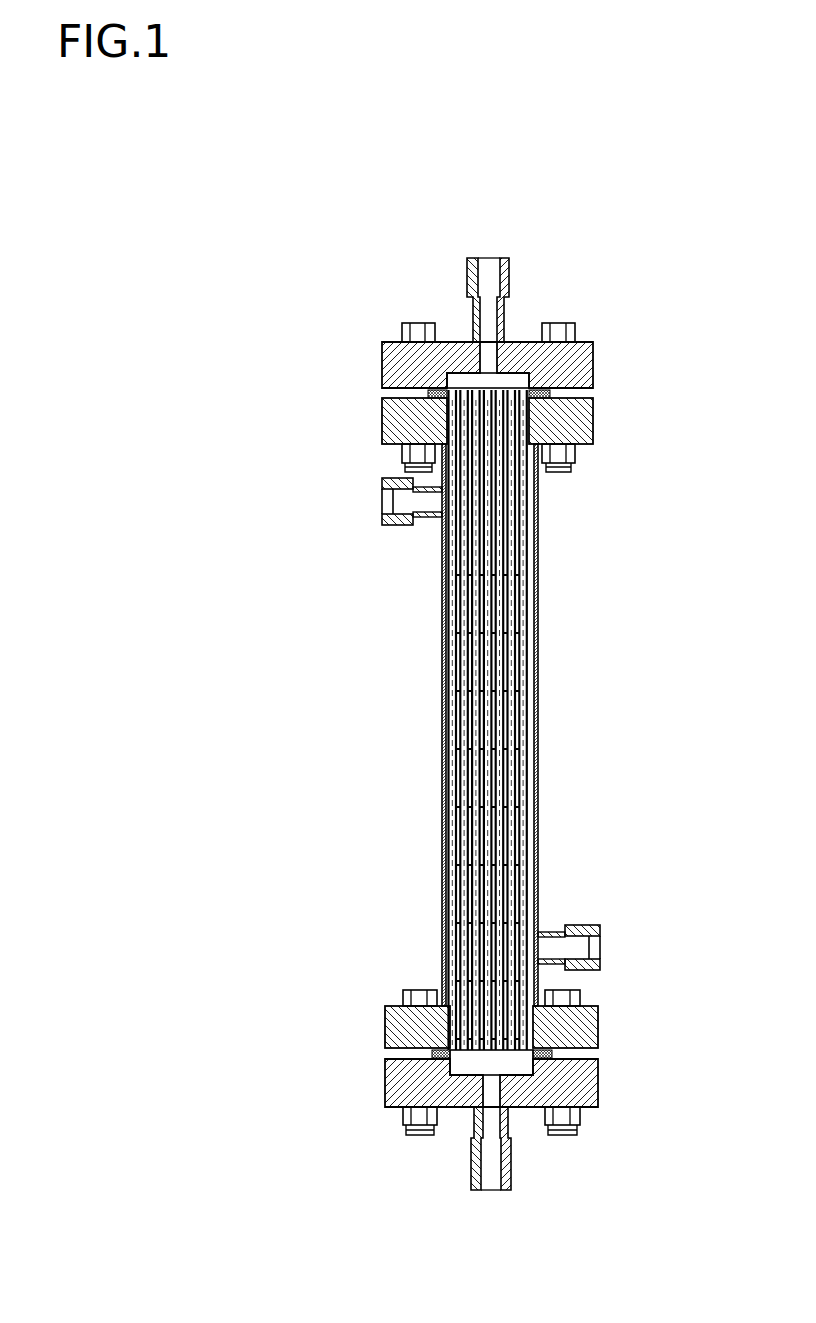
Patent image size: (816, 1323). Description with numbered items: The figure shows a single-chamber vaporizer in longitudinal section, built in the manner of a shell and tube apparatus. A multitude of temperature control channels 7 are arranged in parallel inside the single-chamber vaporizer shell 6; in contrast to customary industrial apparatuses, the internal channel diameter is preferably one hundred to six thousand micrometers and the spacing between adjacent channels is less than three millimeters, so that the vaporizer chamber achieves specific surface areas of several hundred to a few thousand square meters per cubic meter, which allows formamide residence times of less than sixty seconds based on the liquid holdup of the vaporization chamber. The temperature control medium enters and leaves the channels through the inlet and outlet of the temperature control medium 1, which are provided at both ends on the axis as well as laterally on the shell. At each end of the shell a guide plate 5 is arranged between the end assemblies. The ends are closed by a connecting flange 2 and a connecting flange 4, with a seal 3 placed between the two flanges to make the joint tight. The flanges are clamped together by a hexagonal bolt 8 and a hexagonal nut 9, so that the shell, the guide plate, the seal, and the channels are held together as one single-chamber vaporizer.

The inlet and outlet of the temperature control medium 1 is at (467, 283).
The connecting flange 2 is at (392, 354).
The seal 3 is at (430, 394).
The connecting flange 4 is at (392, 431).
The guide plate 5 is at (452, 538).
The single-chamber vaporizer shell 6 is at (442, 607).
The temperature control channel 7 is at (450, 652).
The hexagonal bolt 8 is at (575, 324).
The hexagonal nut 9 is at (575, 458).